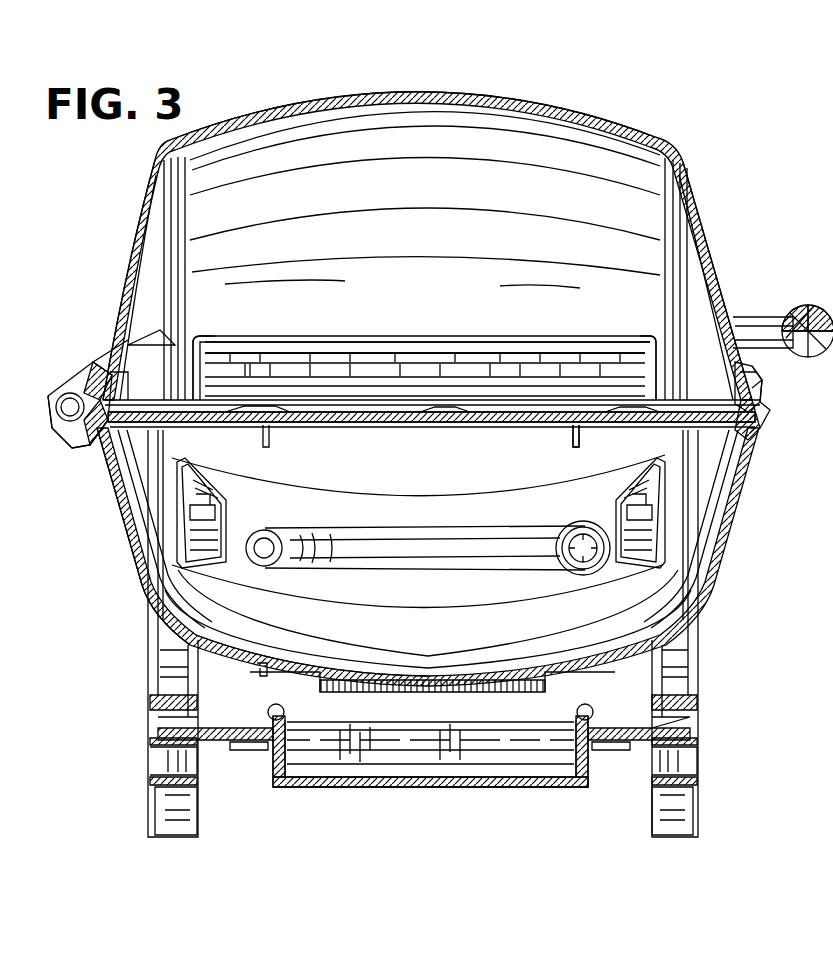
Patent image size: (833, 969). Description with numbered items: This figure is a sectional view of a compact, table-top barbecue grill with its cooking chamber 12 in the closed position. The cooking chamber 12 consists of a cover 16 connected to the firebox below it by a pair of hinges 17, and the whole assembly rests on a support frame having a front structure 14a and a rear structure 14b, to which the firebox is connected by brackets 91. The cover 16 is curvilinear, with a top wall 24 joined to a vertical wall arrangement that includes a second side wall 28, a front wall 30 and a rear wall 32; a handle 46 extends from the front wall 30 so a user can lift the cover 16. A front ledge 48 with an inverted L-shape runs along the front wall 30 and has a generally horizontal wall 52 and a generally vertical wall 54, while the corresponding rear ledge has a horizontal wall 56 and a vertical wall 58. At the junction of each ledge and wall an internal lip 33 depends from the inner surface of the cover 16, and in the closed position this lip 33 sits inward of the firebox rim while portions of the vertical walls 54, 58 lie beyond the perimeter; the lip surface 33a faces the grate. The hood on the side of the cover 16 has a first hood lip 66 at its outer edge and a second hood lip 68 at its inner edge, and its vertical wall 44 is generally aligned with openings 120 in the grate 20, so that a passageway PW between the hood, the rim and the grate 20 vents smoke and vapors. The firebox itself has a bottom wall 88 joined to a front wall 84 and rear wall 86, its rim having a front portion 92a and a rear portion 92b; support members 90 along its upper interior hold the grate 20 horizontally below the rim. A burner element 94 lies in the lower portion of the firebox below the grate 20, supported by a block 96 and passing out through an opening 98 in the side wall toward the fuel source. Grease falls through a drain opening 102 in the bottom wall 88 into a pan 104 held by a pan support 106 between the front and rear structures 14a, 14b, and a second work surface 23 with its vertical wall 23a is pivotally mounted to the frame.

The cooking chamber 12 is at (752, 178).
The front structure 14a is at (690, 678).
The rear structure 14b is at (160, 676).
The cover 16 is at (527, 100).
The hinges 17 is at (60, 430).
The grate 20 is at (432, 408).
The second work surface 23 is at (470, 370).
The generally vertical wall 23a is at (440, 346).
The top wall 24 is at (445, 95).
The second side wall 28 is at (410, 186).
The front wall 30 is at (700, 226).
The rear wall 32 is at (137, 233).
The internal lip 33 is at (120, 372).
The flange lip 33a is at (151, 334).
The generally vertical wall 44 is at (215, 340).
The passageway PW is at (205, 355).
The handle 46 is at (778, 328).
The front ledge 48 is at (755, 366).
The generally horizontal wall 52 is at (760, 380).
The generally vertical wall 54 is at (768, 403).
The generally horizontal wall 56 is at (105, 392).
The generally vertical wall 58 is at (75, 398).
The first hood lip 66 is at (285, 342).
The second hood lip 68 is at (328, 342).
The front wall 84 is at (740, 518).
The rear wall 86 is at (120, 565).
The bottom wall 88 is at (235, 655).
The support members 90 is at (270, 440).
The brackets 91 is at (230, 522).
The front portion 92a is at (758, 424).
The rear portion 92b is at (92, 445).
The burner element 94 is at (430, 545).
The block 96 is at (576, 440).
The opening 98 is at (586, 576).
The drain opening 102 is at (400, 675).
The pan 104 is at (290, 792).
The pan support 106 is at (590, 780).
The openings 120 is at (220, 424).